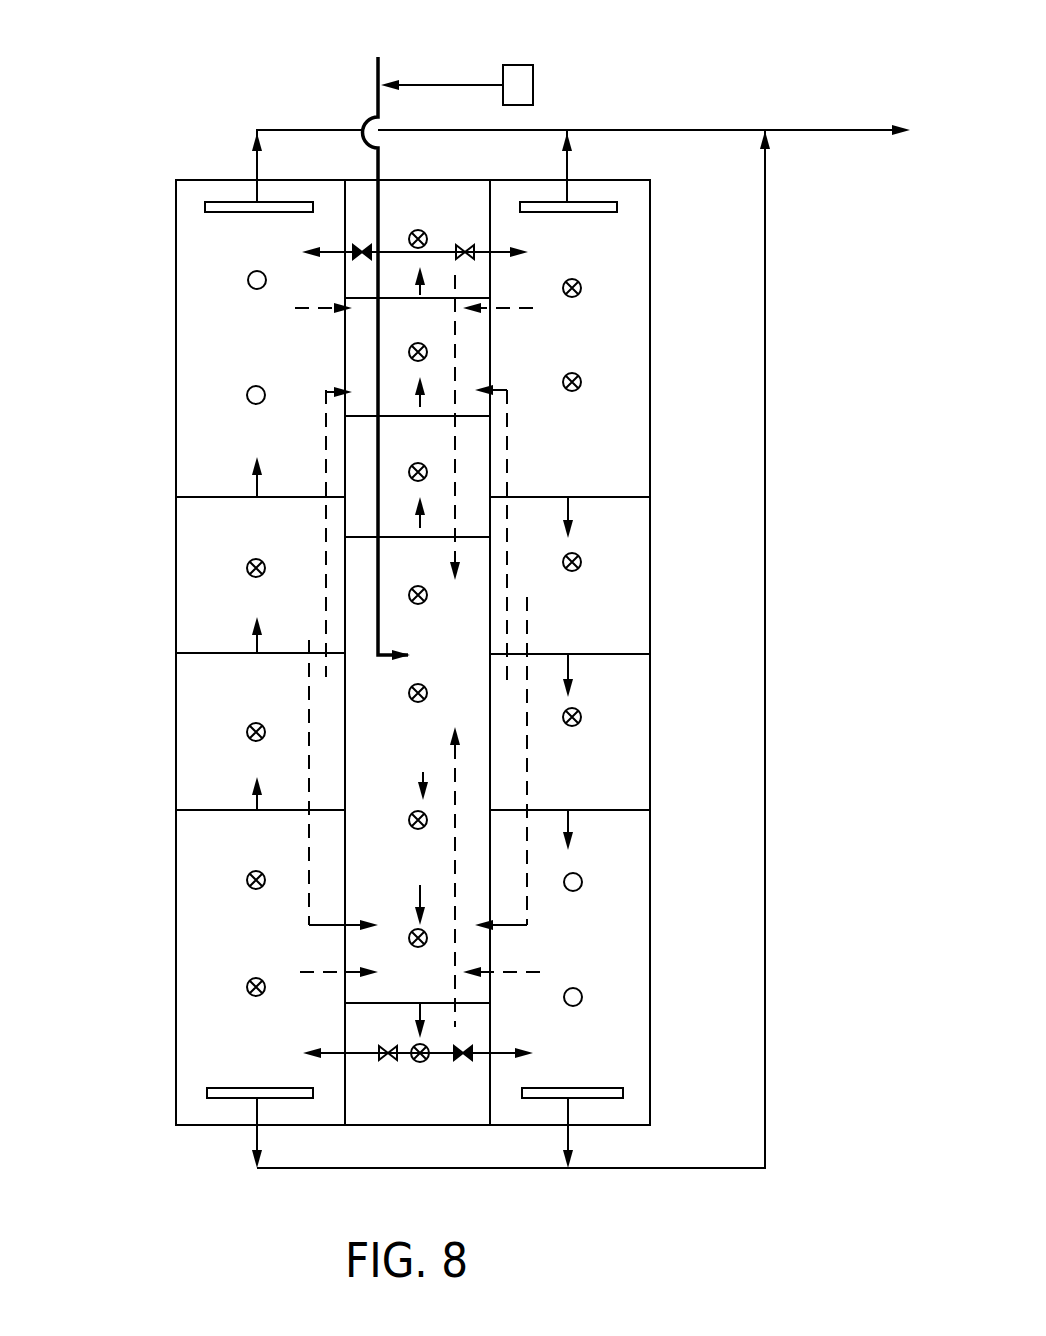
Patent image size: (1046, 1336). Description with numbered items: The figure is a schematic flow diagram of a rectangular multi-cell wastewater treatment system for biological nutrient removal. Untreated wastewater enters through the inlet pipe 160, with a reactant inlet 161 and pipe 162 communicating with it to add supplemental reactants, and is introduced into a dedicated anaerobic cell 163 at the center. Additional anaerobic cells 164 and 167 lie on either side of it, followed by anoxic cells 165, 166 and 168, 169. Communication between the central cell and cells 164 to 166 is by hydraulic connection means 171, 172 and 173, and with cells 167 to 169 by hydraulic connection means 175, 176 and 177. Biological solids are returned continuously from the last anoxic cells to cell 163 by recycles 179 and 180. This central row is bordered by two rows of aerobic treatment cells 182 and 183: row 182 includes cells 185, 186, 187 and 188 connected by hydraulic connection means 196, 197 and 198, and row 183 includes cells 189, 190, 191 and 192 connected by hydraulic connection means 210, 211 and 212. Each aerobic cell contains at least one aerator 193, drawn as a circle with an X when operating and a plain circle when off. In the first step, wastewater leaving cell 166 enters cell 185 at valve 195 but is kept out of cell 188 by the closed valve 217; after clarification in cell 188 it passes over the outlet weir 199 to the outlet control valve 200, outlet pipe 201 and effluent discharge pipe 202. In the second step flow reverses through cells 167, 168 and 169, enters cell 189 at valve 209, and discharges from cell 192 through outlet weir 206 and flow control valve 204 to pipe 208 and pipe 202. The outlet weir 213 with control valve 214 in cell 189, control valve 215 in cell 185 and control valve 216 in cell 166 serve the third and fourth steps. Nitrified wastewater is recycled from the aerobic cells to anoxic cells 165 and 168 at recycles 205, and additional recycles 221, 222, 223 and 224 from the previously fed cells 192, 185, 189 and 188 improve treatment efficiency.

The inlet pipe 160 is at (380, 76).
The reactant inlet 161 is at (533, 82).
The pipe 162 is at (483, 82).
The dedicated anaerobic cell 163 is at (467, 671).
The anaerobic cell 164 is at (358, 463).
The anoxic cell 165 is at (365, 347).
The anoxic cell 166 is at (440, 231).
The anaerobic cell 167 is at (439, 872).
The anoxic cell 168 is at (440, 986).
The anoxic cell 169 is at (453, 1110).
The hydraulic connection means 171 is at (432, 538).
The hydraulic connection means 172 is at (440, 417).
The hydraulic connection means 173 is at (440, 300).
The hydraulic connection means 175 is at (425, 745).
The hydraulic connection means 176 is at (420, 886).
The hydraulic connection means 177 is at (420, 1004).
The recycle 179 is at (455, 362).
The recycle 180 is at (455, 980).
The row of aerobic treatment cells 182 is at (670, 275).
The row of aerobic treatment cells 183 is at (150, 241).
The aerobic cell 185 is at (634, 459).
The aerobic cell 186 is at (634, 542).
The aerobic cell 187 is at (634, 699).
The aerobic cell 188 is at (634, 856).
The aerobic cell 189 is at (240, 856).
The aerobic cell 190 is at (240, 699).
The aerobic cell 191 is at (239, 549).
The aerobic cell 192 is at (239, 462).
The aerator 193 is at (598, 262).
The valve 195 is at (465, 244).
The hydraulic connection means 196 is at (568, 497).
The hydraulic connection means 197 is at (572, 627).
The hydraulic connection means 198 is at (573, 800).
The outlet weir 199 is at (580, 1078).
The outlet control valve 200 is at (568, 1098).
The outlet pipe 201 is at (655, 1168).
The effluent discharge pipe 202 is at (823, 130).
The flow control valve 204 is at (257, 202).
The recycle 205 is at (326, 392).
The outlet weir 206 is at (300, 212).
The outlet pipe 208 is at (255, 148).
The valve 209 is at (365, 1055).
The hydraulic connection means 210 is at (257, 810).
The hydraulic connection means 211 is at (617, 200).
The hydraulic connection means 212 is at (257, 497).
The outlet weir 213 is at (257, 1088).
The control valve 214 is at (270, 1098).
The control valve 215 is at (567, 200).
The control valve 216 is at (360, 243).
The control valve 217 is at (487, 1072).
The recycle 221 is at (345, 308).
The recycle 222 is at (490, 308).
The recycle 223 is at (345, 985).
The recycle 224 is at (490, 976).